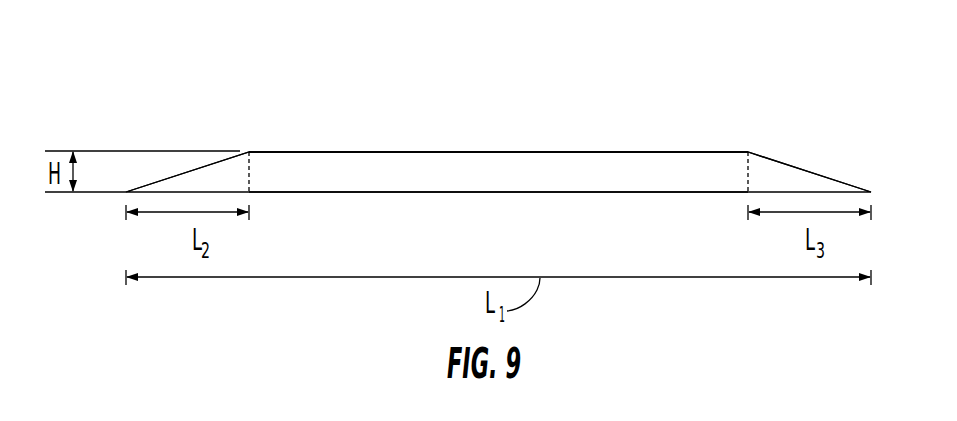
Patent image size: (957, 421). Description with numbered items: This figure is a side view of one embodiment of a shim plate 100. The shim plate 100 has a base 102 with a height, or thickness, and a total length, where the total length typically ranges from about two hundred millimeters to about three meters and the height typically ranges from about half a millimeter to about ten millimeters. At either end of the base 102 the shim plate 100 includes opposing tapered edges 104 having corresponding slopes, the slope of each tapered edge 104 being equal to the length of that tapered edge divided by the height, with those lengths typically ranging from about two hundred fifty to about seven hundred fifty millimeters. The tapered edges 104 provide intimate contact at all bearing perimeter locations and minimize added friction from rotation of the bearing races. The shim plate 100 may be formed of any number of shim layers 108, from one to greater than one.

The shim plate 100 is at (200, 88).
The base 102 is at (407, 150).
The tapered edges 104 is at (230, 168).
The shim layer 108 is at (528, 168).